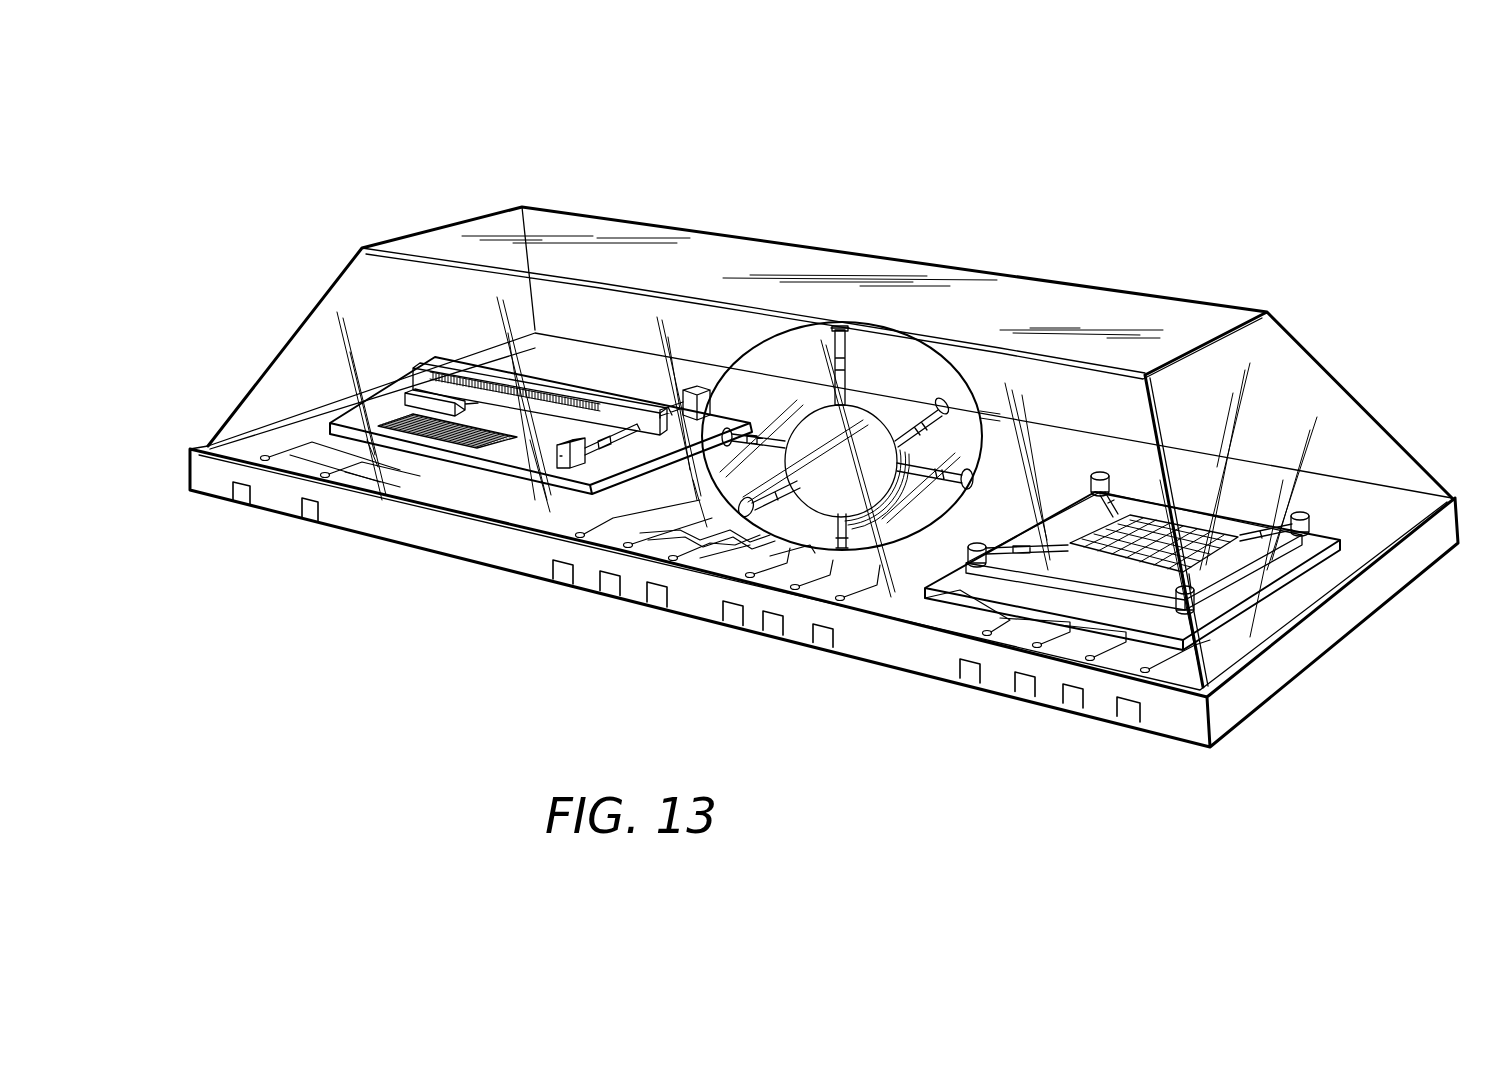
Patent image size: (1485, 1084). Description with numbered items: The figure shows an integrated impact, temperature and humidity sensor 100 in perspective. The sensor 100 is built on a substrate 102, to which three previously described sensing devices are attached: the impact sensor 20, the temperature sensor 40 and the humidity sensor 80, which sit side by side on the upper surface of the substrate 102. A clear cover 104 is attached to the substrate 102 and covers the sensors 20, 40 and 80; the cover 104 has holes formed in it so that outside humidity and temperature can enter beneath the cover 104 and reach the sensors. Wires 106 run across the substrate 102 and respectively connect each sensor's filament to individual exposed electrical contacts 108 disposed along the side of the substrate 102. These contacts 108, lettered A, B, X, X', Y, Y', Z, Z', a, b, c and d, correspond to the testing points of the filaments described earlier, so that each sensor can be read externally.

The integrated impact, temperature and humidity sensor 100 is at (824, 445).
The substrate 102 is at (468, 547).
The clear cover 104 is at (630, 222).
The temperature sensor 40 is at (438, 346).
The impact sensor 20 is at (798, 373).
The humidity sensor 80 is at (1231, 482).
The wires 106 is at (433, 478).
The exposed electrical contacts 108 is at (271, 526).